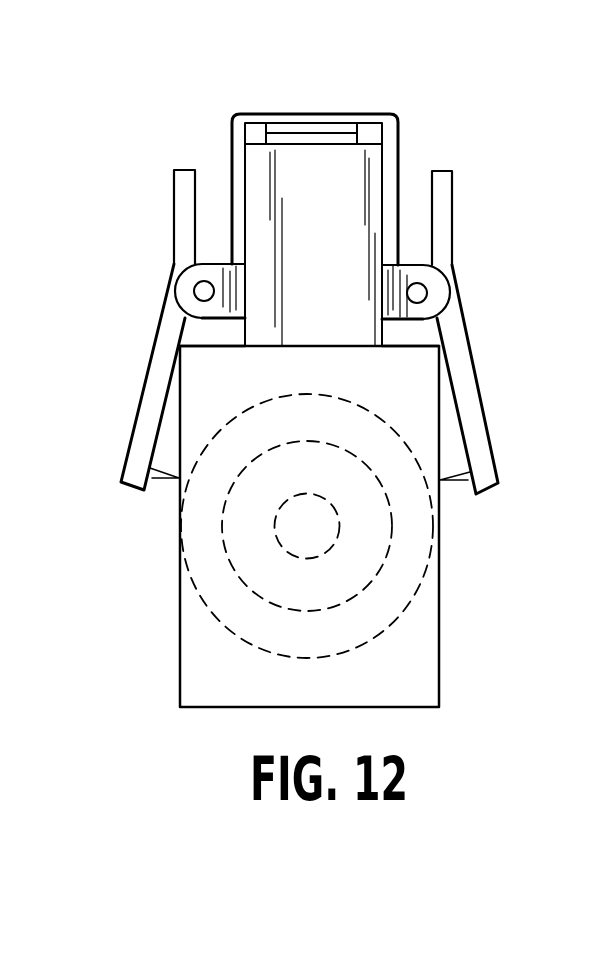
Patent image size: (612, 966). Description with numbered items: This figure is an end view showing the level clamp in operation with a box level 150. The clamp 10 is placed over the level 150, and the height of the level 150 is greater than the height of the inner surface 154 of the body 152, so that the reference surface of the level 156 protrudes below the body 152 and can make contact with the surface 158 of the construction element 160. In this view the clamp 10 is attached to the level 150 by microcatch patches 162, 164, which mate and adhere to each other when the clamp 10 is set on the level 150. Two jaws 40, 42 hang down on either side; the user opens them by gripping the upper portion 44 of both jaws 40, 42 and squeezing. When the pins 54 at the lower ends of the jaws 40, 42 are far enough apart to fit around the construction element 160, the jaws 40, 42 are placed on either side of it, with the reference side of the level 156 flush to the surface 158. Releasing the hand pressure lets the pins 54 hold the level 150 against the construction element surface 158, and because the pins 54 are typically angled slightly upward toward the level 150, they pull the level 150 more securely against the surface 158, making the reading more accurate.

The clamp 10 is at (427, 133).
The jaw 40 is at (125, 452).
The jaw 42 is at (491, 432).
The upper portion 44 is at (173, 182).
The pin 54 is at (162, 485).
The box level 150 is at (338, 232).
The body 152 is at (382, 103).
The inner surface 154 is at (247, 170).
The reference surface of the level 156 is at (260, 347).
The surface of the construction element 158 is at (420, 347).
The construction element 160 is at (441, 635).
The microcatch patch 162 is at (340, 128).
The microcatch patch 164 is at (283, 142).